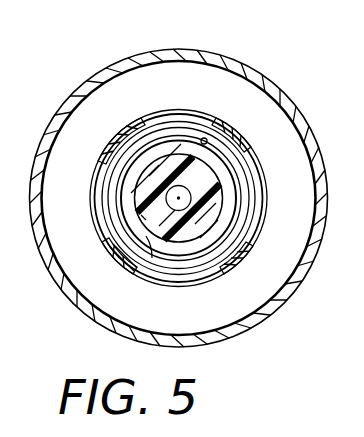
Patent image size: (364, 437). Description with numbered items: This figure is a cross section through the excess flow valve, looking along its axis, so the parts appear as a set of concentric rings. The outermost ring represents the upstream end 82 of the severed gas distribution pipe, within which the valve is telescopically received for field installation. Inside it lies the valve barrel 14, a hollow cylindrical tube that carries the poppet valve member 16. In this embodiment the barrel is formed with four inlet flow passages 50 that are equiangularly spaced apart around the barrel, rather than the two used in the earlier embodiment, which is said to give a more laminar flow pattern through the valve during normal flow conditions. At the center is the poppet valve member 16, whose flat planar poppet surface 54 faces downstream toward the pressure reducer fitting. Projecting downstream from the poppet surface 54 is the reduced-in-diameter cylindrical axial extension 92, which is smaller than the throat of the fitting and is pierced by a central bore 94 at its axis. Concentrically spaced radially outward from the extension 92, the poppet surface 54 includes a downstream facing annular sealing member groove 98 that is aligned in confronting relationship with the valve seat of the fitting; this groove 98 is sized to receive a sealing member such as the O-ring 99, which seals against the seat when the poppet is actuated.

The upstream end 82 is at (231, 57).
The valve barrel 14 is at (91, 198).
The poppet valve member 16 is at (103, 157).
The O-ring 99 is at (181, 140).
The inlet flow passages 50 is at (150, 118).
The poppet surface 54 is at (133, 272).
The annular sealing member groove 98 is at (206, 138).
The cylindrical axial extension 92 is at (201, 232).
The central bore 94 is at (194, 202).